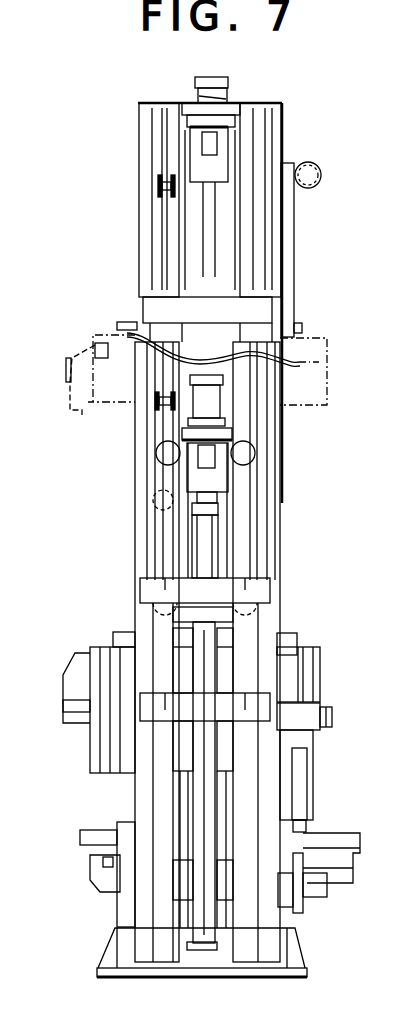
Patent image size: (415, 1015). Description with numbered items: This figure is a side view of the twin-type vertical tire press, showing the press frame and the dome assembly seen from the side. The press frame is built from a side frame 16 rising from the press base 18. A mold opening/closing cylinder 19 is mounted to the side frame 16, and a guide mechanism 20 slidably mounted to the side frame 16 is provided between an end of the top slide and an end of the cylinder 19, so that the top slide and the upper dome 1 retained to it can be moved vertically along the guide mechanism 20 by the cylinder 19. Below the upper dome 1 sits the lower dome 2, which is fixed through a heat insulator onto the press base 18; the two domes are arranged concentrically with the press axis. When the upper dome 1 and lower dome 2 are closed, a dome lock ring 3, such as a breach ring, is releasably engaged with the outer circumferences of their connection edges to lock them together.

The upper dome 1 is at (313, 368).
The lower dome 2 is at (318, 783).
The dome lock ring 3 is at (332, 717).
The side frame 16 is at (270, 435).
The press base 18 is at (123, 835).
The mold opening/closing cylinder 19 is at (202, 762).
The guide mechanism 20 is at (223, 527).